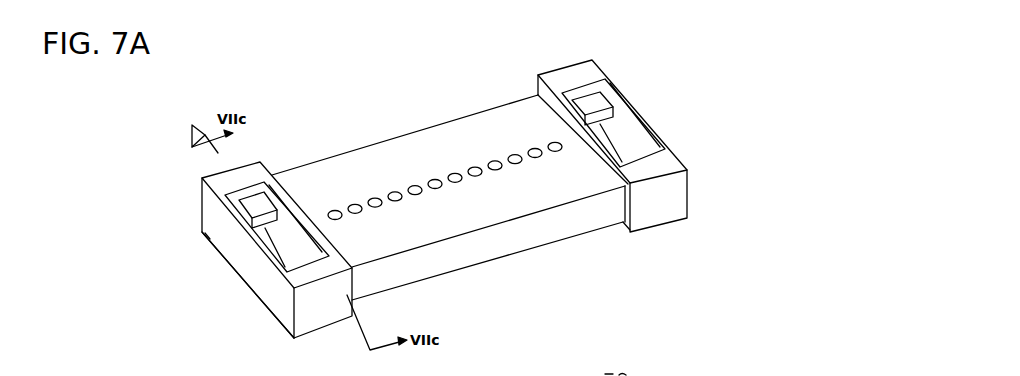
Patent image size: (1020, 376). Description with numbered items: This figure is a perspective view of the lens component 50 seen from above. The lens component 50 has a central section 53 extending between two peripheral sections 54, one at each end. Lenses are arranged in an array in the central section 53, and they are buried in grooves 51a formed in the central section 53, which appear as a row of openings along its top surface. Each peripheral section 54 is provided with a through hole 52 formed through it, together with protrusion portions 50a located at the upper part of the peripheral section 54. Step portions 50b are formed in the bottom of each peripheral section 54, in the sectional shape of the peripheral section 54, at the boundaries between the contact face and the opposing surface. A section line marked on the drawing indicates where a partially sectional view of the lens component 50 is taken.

The lens component 50 is at (737, 84).
The protrusion portions 50a is at (258, 206).
The step portions 50b is at (213, 239).
The grooves 51a is at (474, 176).
The through holes 52 is at (280, 240).
The central section 53 is at (568, 222).
The peripheral sections 54 is at (318, 316).